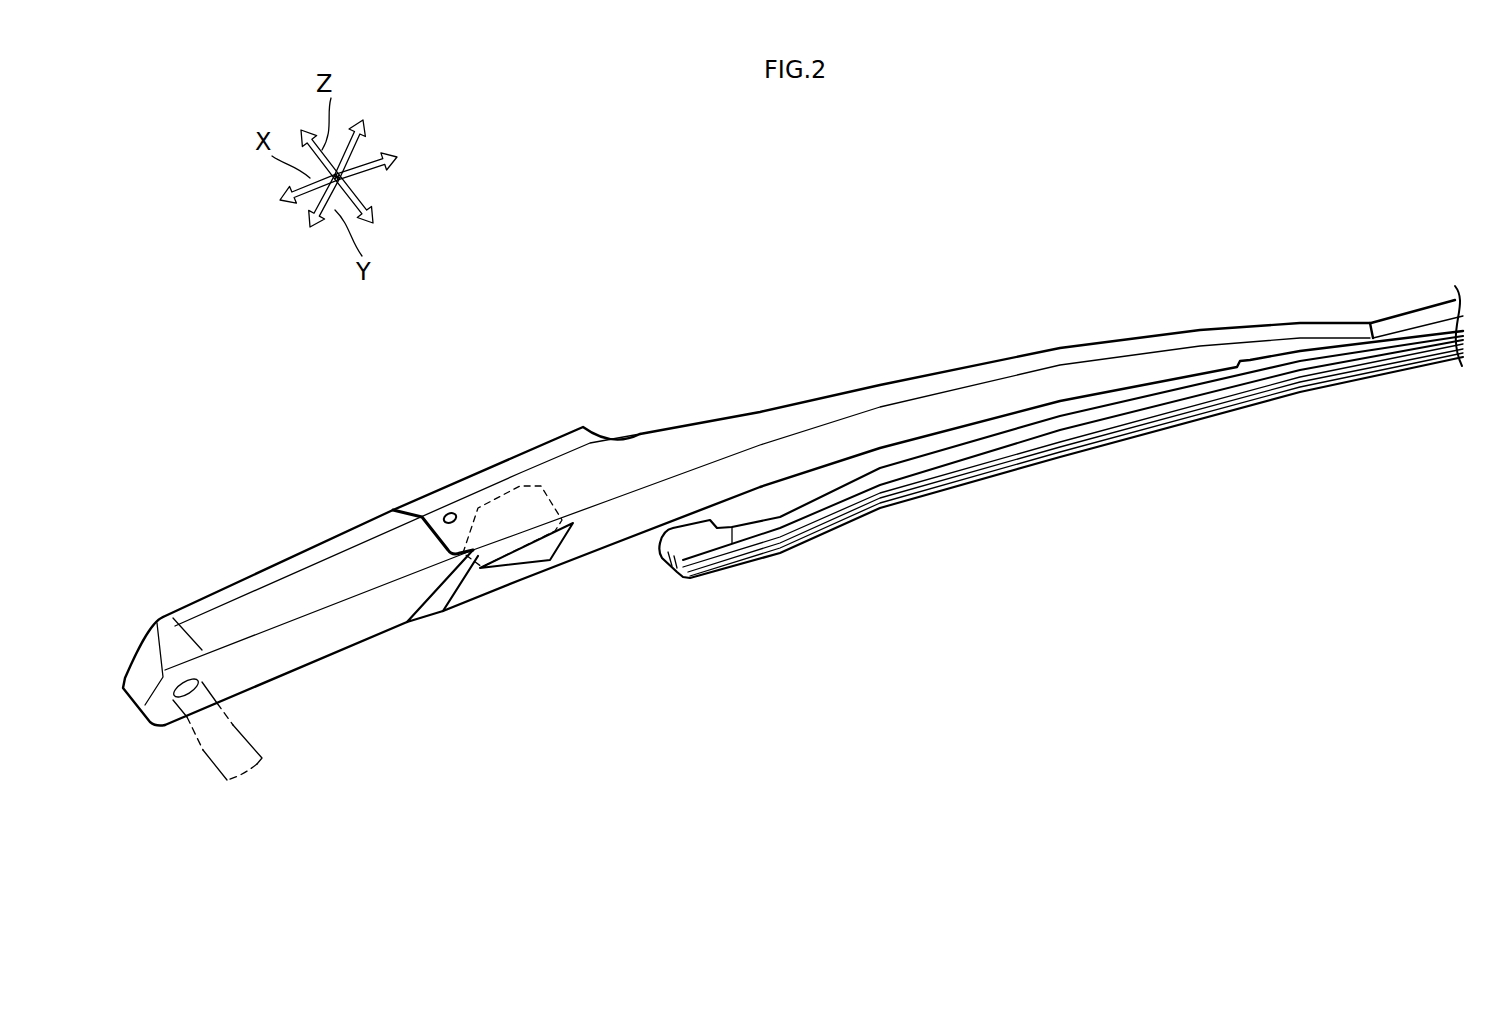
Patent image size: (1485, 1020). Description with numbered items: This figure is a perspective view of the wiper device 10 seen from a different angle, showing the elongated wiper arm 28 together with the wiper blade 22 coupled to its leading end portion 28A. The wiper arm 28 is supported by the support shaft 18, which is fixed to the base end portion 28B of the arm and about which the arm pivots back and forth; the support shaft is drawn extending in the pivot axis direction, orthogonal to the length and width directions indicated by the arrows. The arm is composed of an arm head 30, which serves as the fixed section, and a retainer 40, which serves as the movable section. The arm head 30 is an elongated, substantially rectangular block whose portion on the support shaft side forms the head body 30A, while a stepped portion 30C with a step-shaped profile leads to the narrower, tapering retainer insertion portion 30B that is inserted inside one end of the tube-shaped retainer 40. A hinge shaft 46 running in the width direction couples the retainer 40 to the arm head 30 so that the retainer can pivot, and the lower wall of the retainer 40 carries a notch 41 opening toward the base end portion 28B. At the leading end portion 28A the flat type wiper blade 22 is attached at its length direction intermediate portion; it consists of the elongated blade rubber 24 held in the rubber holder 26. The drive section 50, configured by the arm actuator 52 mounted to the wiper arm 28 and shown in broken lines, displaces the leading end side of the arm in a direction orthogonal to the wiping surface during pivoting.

The wiper device 10 is at (1016, 240).
The support shaft 18 is at (205, 748).
The wiper blade 22 is at (1217, 413).
The blade rubber 24 is at (1080, 462).
The rubber holder 26 is at (947, 459).
The wiper arm 28 is at (668, 432).
The leading end portion 28A is at (1312, 320).
The base end portion 28B is at (155, 632).
The arm head 30 is at (268, 563).
The head body 30A is at (328, 640).
The retainer insertion portion 30B is at (470, 574).
The stepped portion 30C is at (420, 624).
The retainer 40 is at (864, 383).
The notch 41 is at (528, 560).
The hinge shaft 46 is at (452, 512).
The drive section 50 is at (521, 487).
The arm actuator 52 is at (512, 463).